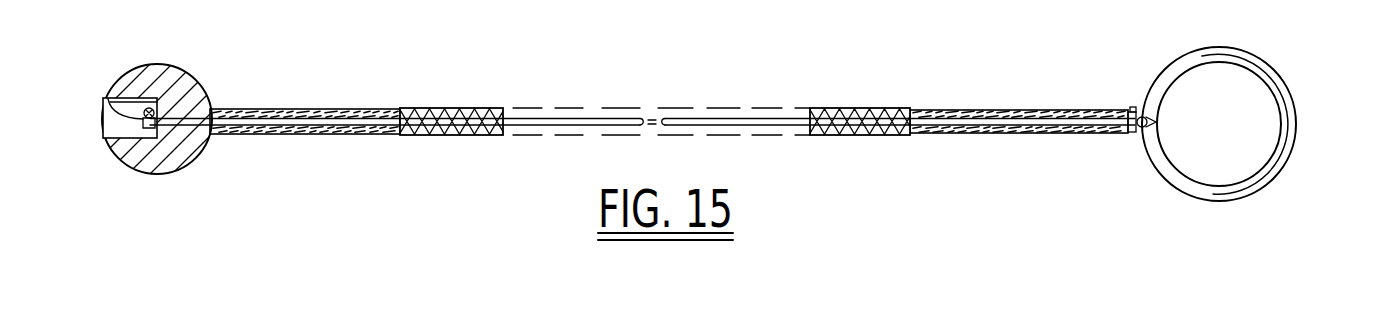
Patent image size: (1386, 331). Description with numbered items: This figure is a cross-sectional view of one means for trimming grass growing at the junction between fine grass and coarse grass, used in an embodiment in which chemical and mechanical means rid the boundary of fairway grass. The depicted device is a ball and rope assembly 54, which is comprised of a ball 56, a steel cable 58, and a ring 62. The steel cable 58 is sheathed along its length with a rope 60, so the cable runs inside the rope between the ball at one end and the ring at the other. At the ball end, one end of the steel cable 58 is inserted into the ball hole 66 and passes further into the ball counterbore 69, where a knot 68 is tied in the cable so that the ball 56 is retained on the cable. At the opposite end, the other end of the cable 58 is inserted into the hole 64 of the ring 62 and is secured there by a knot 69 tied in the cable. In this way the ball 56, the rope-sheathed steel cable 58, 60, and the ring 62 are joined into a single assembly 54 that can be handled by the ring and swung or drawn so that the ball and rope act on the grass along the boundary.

The ball and rope assembly 54 is at (422, 89).
The ball 56 is at (193, 76).
The steel cable 58 is at (584, 118).
The rope 60 is at (316, 108).
The ring 62 is at (1273, 76).
The hole 64 is at (1152, 137).
The ball hole 66 is at (177, 128).
The knot 68 is at (107, 99).
The ball counterbore 69 is at (118, 122).